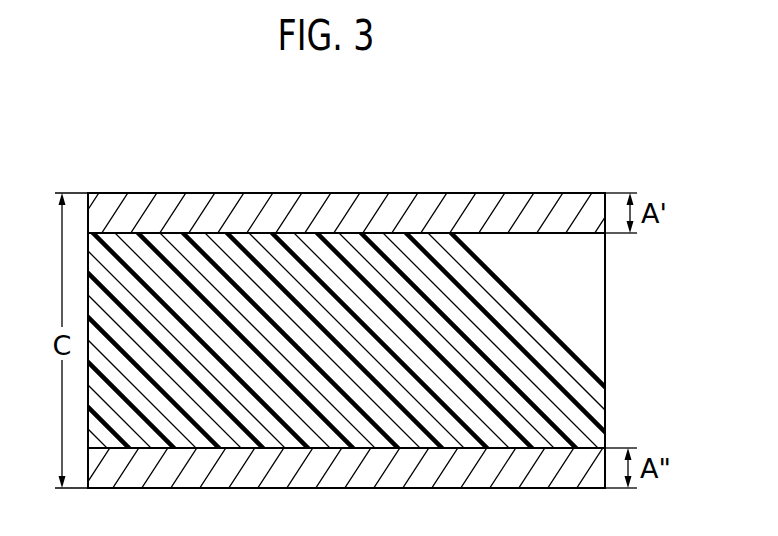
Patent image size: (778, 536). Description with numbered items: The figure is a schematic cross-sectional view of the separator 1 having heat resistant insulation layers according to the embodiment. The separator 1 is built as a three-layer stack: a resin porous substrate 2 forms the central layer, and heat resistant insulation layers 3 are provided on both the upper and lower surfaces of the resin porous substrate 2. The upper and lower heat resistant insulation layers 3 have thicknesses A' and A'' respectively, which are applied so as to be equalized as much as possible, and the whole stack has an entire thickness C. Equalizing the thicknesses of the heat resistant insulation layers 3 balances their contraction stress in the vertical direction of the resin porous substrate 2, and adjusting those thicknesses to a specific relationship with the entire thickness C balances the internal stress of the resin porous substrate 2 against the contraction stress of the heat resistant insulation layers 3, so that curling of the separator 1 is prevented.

The separator having heat resistant insulation layers 1 is at (132, 132).
The resin porous substrate 2 is at (605, 335).
The heat resistant insulation layers 3 is at (507, 192).